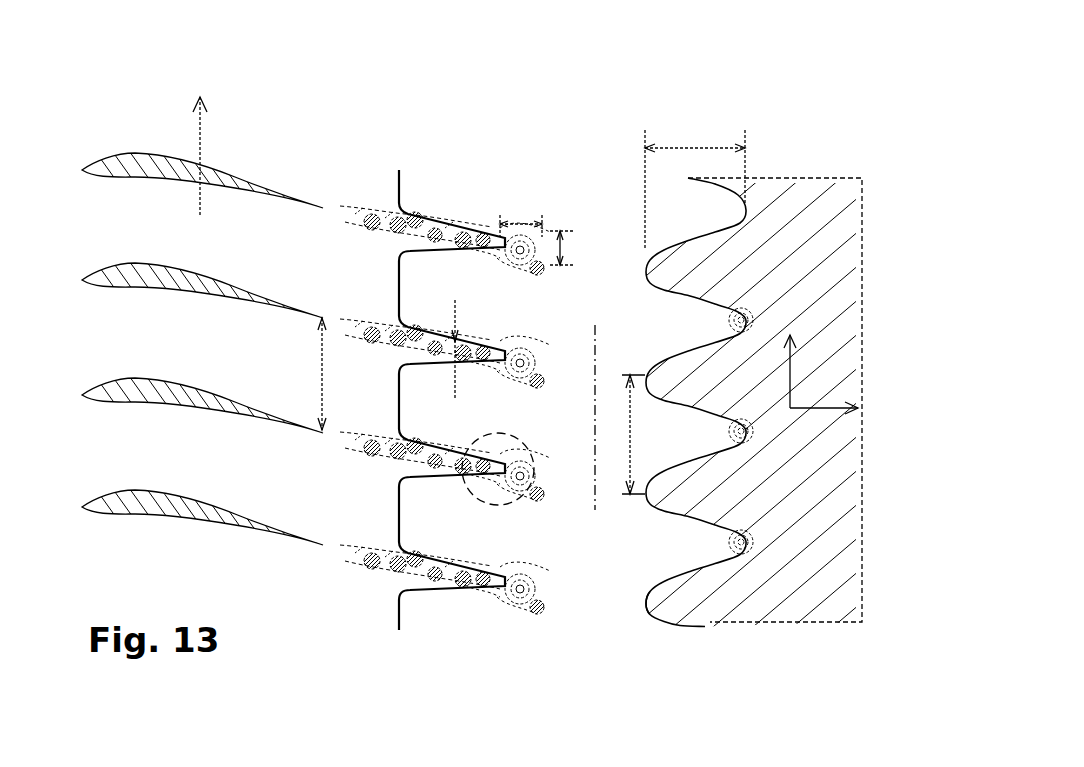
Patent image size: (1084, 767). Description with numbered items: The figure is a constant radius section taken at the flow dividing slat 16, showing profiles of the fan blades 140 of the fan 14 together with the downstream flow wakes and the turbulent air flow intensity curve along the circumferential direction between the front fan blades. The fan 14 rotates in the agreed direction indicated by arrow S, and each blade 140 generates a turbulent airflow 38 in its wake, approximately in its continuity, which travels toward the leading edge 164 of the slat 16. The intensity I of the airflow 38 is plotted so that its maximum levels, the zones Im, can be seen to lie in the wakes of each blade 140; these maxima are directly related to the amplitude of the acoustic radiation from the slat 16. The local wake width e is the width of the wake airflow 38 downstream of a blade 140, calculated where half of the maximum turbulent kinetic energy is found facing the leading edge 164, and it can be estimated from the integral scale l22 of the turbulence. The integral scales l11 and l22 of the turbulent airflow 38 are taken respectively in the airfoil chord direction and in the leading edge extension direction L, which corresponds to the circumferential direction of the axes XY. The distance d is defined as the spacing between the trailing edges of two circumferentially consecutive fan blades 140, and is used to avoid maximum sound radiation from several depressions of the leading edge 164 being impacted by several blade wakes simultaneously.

The fan blade 140 is at (142, 160).
The turbulent airflow 38 is at (340, 440).
The fan 14 is at (92, 445).
The slat 16 is at (658, 285).
The leading edge 164 is at (656, 607).
The intensity of airflow I is at (432, 598).
The maximum intensity zones Im is at (488, 505).
The direction of rotation arrow S is at (200, 135).
The undulation height h is at (695, 184).
The distance between consecutive fan blades d is at (330, 374).
The wake width e is at (461, 347).
The integral scale of turbulence in chord direction l11 is at (518, 210).
The integral scale of turbulence in leading edge direction l22 is at (579, 248).
The leading edge extension direction L is at (587, 405).
The axes X and Y XY is at (819, 358).